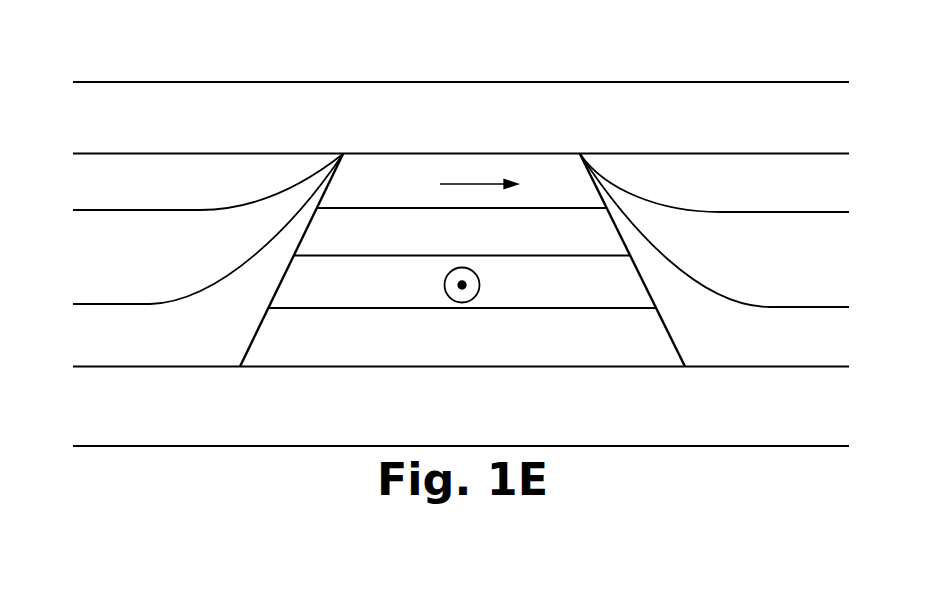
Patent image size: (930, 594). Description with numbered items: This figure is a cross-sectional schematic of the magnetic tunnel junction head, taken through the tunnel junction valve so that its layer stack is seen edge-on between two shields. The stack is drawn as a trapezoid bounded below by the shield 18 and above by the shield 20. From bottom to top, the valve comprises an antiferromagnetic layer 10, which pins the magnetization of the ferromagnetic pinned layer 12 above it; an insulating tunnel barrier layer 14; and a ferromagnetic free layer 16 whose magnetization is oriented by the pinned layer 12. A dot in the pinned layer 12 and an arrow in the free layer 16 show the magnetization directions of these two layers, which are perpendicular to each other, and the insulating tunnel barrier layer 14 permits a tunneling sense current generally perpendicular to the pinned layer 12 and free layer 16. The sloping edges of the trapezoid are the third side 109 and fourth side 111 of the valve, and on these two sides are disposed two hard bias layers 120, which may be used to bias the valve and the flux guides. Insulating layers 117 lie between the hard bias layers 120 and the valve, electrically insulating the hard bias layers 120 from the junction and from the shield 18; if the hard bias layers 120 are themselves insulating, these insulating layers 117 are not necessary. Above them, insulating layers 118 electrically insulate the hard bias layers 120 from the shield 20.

The antiferromagnetic layer 10 is at (462, 337).
The ferromagnetic pinned layer 12 is at (485, 284).
The insulating tunnel barrier layer 14 is at (462, 232).
The ferromagnetic free layer 16 is at (500, 186).
The shield 18 is at (461, 414).
The shield 20 is at (461, 118).
The third side 109 is at (283, 273).
The fourth side 111 is at (623, 243).
The insulating layers 117 is at (461, 342).
The insulating layers 118 is at (461, 181).
The hard bias layers 120 is at (461, 230).